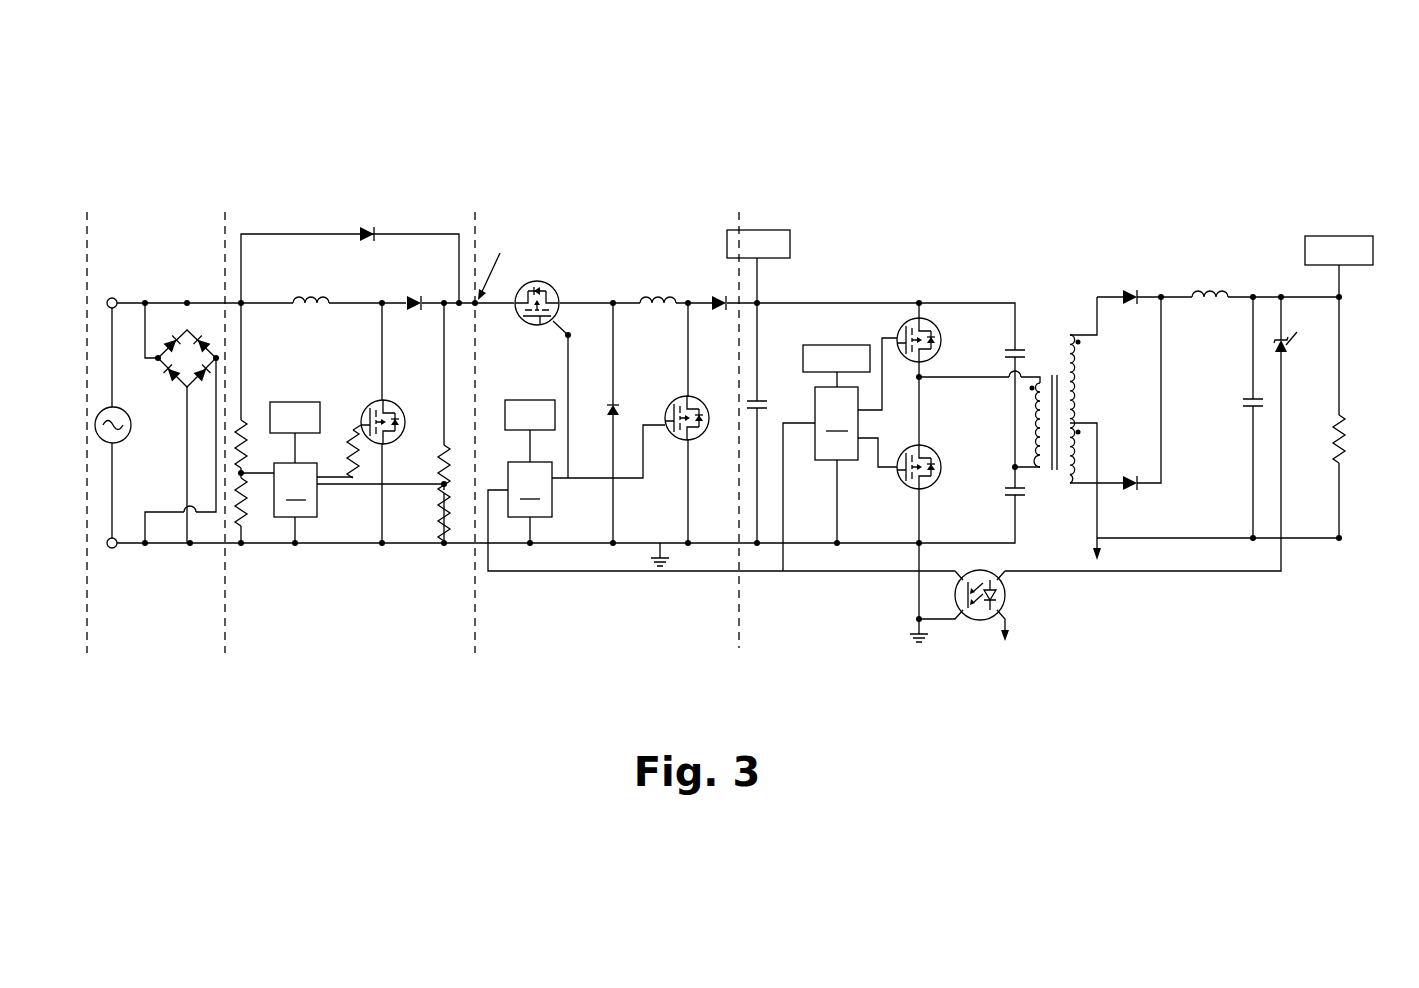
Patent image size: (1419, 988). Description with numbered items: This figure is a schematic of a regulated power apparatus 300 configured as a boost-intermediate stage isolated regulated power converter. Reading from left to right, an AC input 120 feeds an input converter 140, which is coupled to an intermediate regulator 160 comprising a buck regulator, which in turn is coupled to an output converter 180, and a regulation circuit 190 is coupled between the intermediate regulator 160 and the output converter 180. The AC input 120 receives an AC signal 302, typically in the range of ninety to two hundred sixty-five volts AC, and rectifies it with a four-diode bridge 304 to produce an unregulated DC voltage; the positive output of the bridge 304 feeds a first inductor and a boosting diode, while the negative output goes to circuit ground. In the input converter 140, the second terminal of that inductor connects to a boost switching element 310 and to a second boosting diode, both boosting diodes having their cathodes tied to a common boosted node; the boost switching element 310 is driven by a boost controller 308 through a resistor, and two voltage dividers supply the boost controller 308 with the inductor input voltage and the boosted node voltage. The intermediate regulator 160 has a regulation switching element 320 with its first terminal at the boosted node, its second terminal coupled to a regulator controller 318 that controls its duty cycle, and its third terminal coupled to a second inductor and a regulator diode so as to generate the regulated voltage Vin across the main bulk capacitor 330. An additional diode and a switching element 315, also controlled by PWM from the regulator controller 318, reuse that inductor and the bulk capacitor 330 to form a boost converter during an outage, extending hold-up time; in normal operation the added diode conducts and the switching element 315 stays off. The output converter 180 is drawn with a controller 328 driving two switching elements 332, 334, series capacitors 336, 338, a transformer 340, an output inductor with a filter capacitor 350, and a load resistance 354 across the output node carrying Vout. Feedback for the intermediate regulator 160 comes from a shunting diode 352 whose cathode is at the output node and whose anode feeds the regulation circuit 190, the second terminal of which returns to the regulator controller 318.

The regulated power apparatus 300 is at (1208, 82).
The AC input 120 is at (164, 216).
The input converter 140 is at (288, 216).
The intermediate regulator 160 is at (566, 212).
The output converter 180 is at (983, 216).
The AC signal 302 is at (124, 440).
The four-diode bridge 304 is at (163, 333).
The boost controller 308 is at (317, 503).
The boost switching element 310 is at (372, 403).
The switching element Q5 315 is at (673, 401).
The regulator controller 318 is at (552, 503).
The regulation switching element 320 is at (527, 327).
The controller U1 328 is at (822, 461).
The capacitor C1 330 is at (768, 386).
The transistor Q3 332 is at (943, 330).
The transistor Q4 334 is at (943, 465).
The capacitor C2 336 is at (1024, 347).
The capacitor C3 338 is at (1025, 500).
The transformer T1 340 is at (1075, 298).
The capacitor C4 350 is at (1248, 394).
The shunting diode 352 is at (1289, 352).
The load resistor RL 354 is at (1326, 455).
The regulation circuit 190 is at (975, 622).